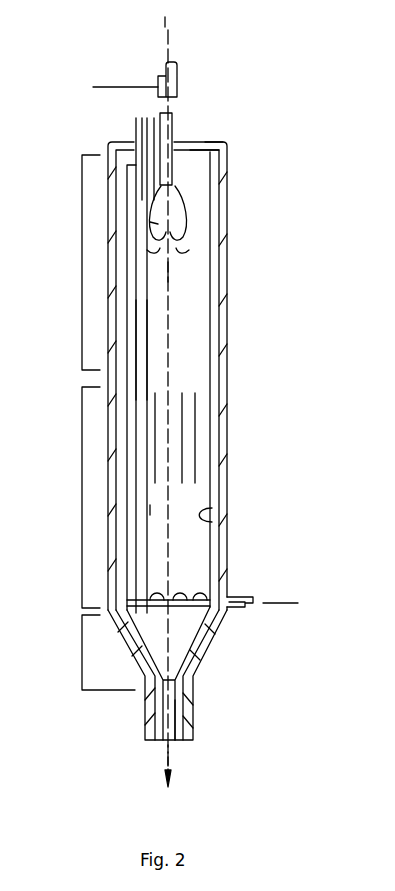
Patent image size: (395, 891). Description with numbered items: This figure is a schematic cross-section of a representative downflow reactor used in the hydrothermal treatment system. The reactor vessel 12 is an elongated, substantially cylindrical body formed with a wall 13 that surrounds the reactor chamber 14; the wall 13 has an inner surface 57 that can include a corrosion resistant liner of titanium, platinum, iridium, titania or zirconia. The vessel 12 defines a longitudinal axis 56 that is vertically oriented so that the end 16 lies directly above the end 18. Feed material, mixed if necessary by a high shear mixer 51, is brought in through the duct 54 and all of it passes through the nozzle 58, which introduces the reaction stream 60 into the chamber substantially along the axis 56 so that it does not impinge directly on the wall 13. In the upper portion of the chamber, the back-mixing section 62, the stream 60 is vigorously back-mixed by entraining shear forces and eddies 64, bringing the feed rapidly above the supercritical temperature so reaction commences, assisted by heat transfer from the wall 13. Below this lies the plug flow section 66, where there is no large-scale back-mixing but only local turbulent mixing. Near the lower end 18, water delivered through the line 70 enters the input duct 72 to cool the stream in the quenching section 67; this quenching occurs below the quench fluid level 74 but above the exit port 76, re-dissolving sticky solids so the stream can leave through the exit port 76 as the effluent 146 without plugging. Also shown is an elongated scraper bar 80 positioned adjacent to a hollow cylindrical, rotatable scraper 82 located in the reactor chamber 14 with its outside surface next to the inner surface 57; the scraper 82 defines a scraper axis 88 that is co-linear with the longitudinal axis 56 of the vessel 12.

The reactor vessel 12 is at (228, 300).
The wall 13 is at (218, 348).
The reactor chamber 14 is at (160, 342).
The end 16 is at (222, 142).
The end 18 is at (207, 655).
The high shear mixer 51 is at (178, 71).
The duct 54 is at (133, 87).
The longitudinal axis 56 is at (211, 400).
The inner surface 57 is at (200, 142).
The nozzle 58 is at (178, 114).
The reaction stream 60 is at (177, 204).
The back-mixing section 62 is at (82, 268).
The eddies 64 is at (176, 218).
The plug flow section 66 is at (82, 490).
The quenching section 67 is at (82, 652).
The line 70 is at (283, 603).
The input duct 72 is at (235, 608).
The quench fluid level 74 is at (190, 595).
The exit port 76 is at (184, 740).
The scraper bar 80 is at (150, 510).
The scraper 82 is at (210, 522).
The scraper axis 88 is at (170, 21).
The effluent 146 is at (168, 766).